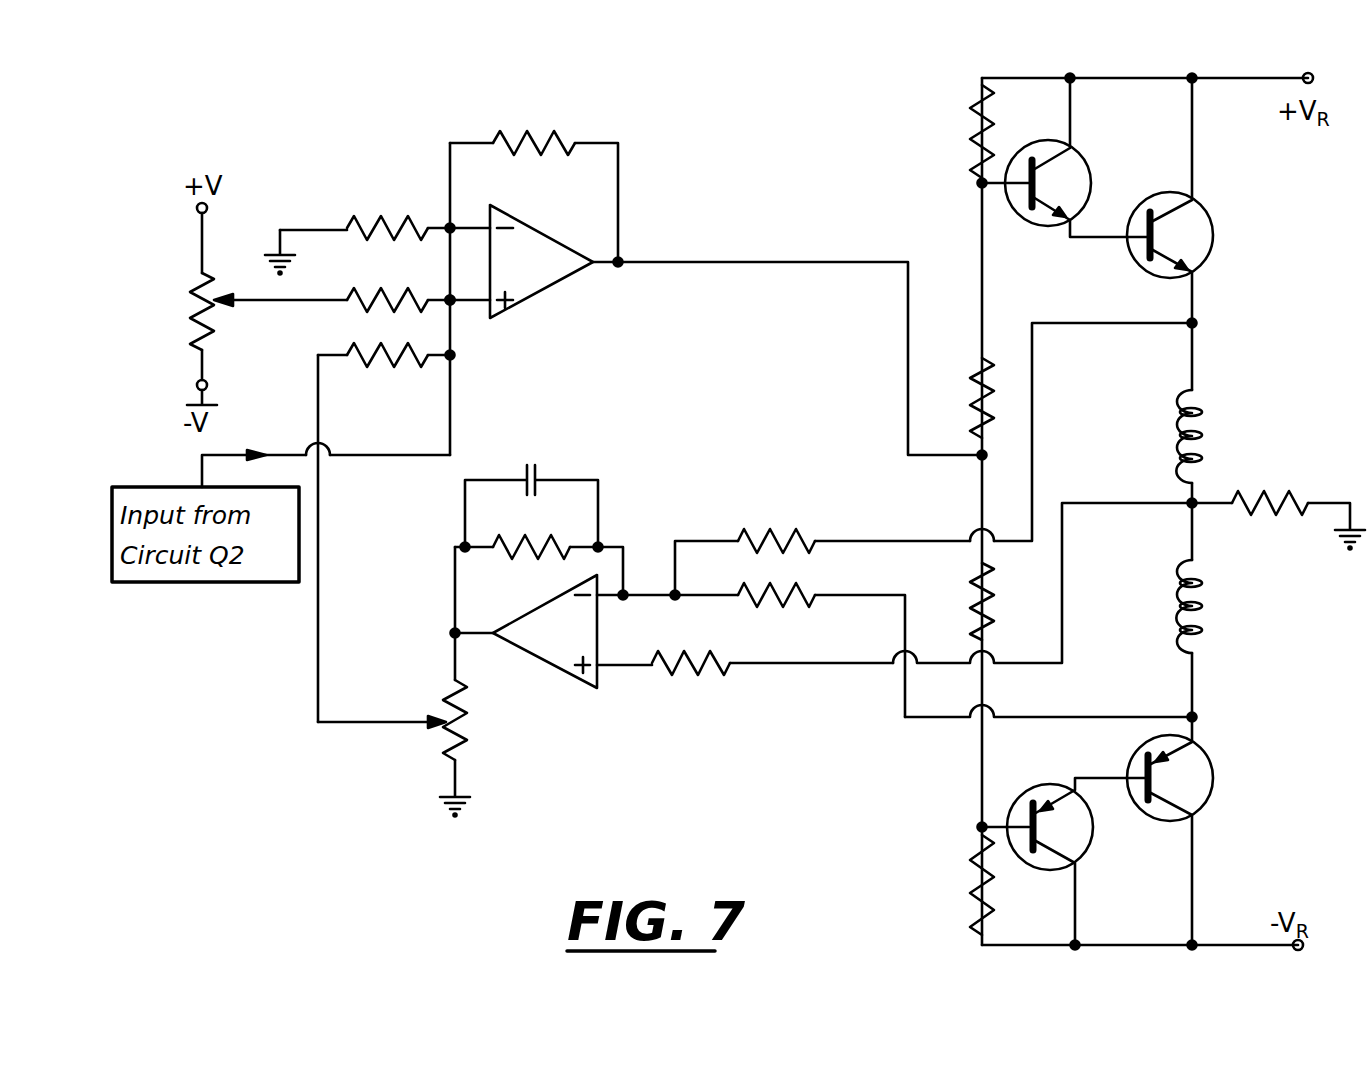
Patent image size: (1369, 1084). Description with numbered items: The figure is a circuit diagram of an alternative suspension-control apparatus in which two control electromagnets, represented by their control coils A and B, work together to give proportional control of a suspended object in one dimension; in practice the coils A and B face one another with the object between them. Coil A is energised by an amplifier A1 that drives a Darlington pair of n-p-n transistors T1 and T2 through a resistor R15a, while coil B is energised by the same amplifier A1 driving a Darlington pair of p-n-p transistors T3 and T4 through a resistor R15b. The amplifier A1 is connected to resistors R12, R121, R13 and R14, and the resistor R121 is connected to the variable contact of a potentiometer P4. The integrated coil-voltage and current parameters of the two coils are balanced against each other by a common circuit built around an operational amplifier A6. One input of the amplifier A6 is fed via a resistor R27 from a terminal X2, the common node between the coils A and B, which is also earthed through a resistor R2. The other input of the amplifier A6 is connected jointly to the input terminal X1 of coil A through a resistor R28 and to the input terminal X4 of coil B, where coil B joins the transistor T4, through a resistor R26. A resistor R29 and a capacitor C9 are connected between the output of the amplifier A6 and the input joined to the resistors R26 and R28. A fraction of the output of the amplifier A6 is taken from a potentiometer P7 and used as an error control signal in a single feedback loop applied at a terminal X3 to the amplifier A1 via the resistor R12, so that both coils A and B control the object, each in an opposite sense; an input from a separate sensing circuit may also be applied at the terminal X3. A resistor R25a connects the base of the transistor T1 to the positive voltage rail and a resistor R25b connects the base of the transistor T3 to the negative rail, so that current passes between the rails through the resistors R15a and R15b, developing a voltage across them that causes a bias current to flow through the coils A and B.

The potentiometer P4 is at (252, 311).
The resistor R13 is at (418, 211).
The resistor R121 is at (418, 283).
The resistor R12 is at (384, 373).
The resistor R14 is at (534, 180).
The amplifier A1 is at (550, 275).
The terminal X3 is at (456, 304).
The capacitor C9 is at (531, 501).
The resistor R29 is at (539, 553).
The operational amplifier A6 is at (562, 650).
The potentiometer P7 is at (408, 748).
The resistor R28 is at (854, 529).
The resistor R26 is at (821, 650).
The resistor R27 is at (772, 650).
The resistor R25a is at (948, 131).
The resistor R25b is at (946, 885).
The resistor R15a is at (953, 398).
The resistor R15b is at (1013, 601).
The transistor T1 is at (1066, 157).
The transistor T2 is at (1183, 200).
The transistor T3 is at (1065, 859).
The transistor T4 is at (1181, 831).
The input terminal X1 is at (1197, 322).
The terminal X2 is at (1197, 509).
The input terminal X4 is at (1197, 716).
The control coil A is at (1199, 436).
The control coil B is at (1199, 606).
The resistor R2 is at (1278, 509).